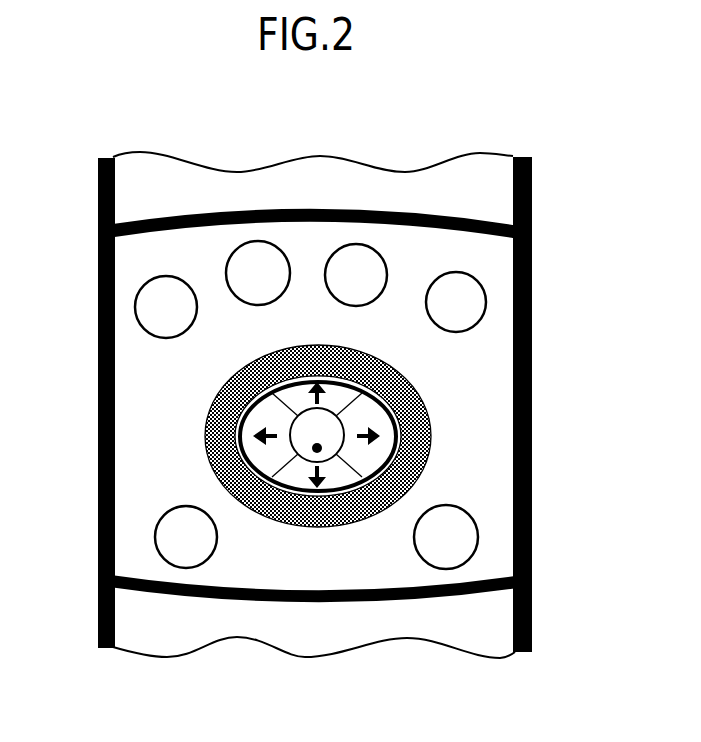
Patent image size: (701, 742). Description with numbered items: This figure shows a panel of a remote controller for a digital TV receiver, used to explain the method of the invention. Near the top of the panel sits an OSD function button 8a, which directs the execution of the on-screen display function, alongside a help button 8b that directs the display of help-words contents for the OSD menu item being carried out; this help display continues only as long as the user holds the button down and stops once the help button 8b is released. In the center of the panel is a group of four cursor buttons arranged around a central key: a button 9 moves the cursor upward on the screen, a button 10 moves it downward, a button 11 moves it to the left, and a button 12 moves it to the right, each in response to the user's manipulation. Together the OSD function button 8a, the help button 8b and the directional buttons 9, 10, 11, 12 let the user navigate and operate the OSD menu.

The OSD function button 8a is at (362, 246).
The help button 8b is at (487, 302).
The cursor up button 9 is at (338, 390).
The cursor down button 10 is at (293, 478).
The cursor left button 11 is at (270, 411).
The cursor right button 12 is at (373, 453).